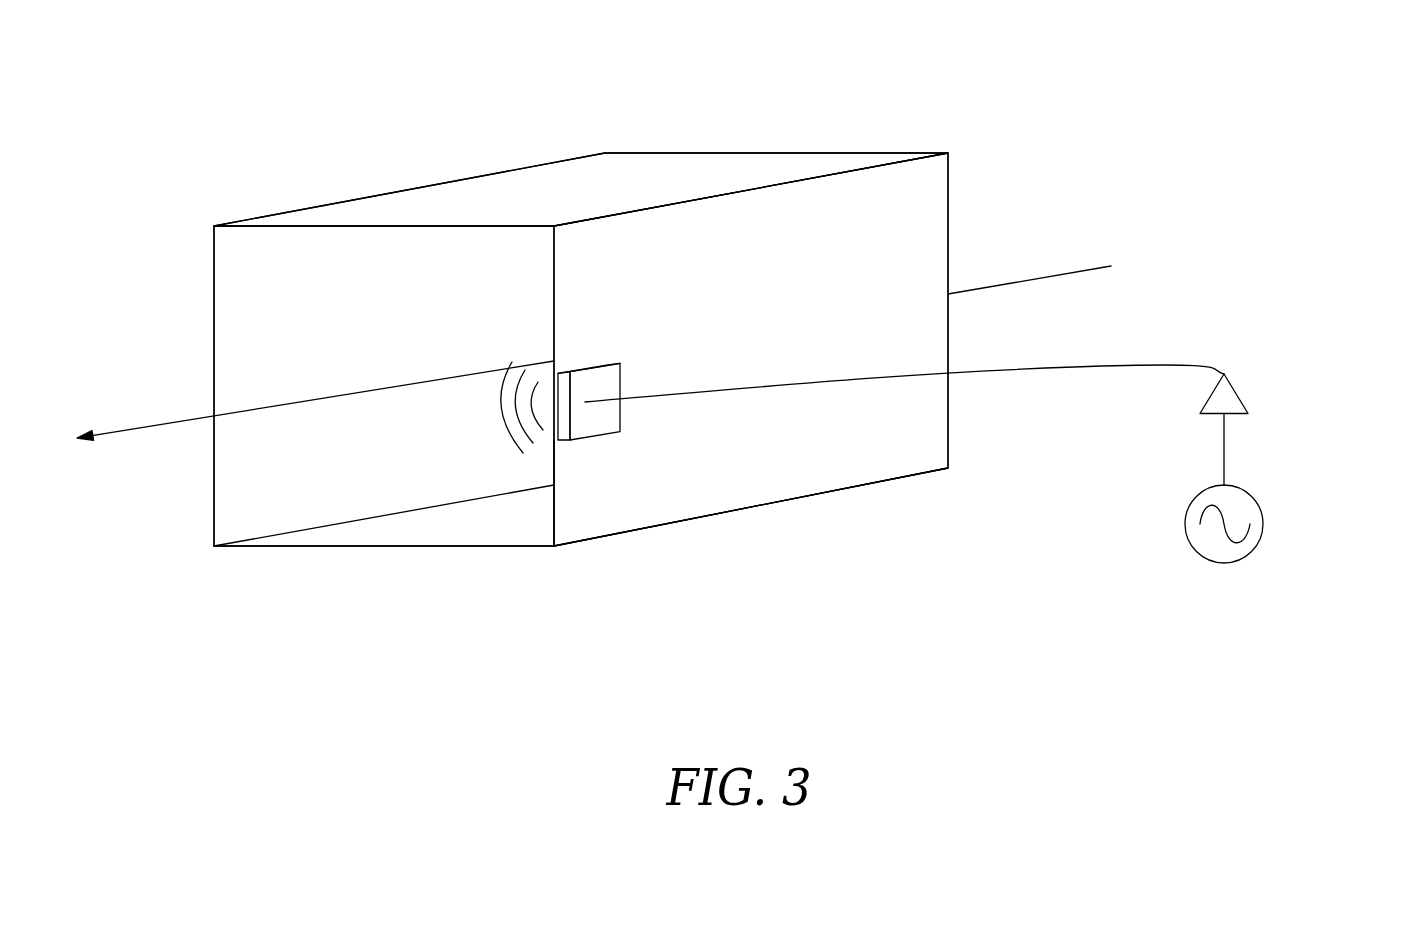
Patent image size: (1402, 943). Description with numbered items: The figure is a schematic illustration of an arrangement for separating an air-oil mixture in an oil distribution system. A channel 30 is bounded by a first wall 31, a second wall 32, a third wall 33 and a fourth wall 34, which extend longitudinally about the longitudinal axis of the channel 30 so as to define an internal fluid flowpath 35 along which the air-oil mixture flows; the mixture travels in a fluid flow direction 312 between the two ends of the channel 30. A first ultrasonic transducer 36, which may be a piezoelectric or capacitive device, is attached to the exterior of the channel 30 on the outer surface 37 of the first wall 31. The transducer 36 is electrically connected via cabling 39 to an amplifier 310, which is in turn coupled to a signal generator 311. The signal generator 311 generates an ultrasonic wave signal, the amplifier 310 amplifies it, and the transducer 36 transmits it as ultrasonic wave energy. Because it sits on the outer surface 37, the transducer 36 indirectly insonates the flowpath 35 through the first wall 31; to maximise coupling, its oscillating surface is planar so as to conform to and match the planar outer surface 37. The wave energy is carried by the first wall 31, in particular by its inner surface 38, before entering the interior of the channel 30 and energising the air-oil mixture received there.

The channel 30 is at (803, 86).
The first wall 31 is at (742, 475).
The second wall 32 is at (647, 177).
The third wall 33 is at (214, 337).
The fourth wall 34 is at (418, 548).
The internal fluid flowpath 35 is at (286, 280).
The first ultrasonic transducer 36 is at (612, 413).
The outer surface 37 is at (576, 504).
The inner surface 38 is at (540, 508).
The cabling 39 is at (836, 382).
The amplifier 310 is at (1237, 392).
The signal generator 311 is at (1263, 505).
The fluid flow direction 312 is at (298, 403).